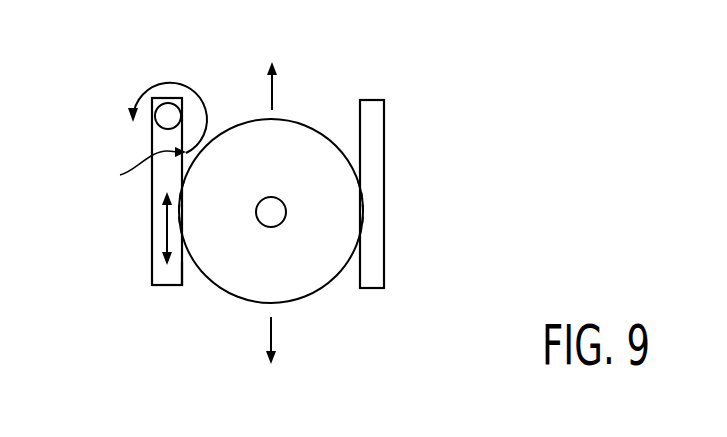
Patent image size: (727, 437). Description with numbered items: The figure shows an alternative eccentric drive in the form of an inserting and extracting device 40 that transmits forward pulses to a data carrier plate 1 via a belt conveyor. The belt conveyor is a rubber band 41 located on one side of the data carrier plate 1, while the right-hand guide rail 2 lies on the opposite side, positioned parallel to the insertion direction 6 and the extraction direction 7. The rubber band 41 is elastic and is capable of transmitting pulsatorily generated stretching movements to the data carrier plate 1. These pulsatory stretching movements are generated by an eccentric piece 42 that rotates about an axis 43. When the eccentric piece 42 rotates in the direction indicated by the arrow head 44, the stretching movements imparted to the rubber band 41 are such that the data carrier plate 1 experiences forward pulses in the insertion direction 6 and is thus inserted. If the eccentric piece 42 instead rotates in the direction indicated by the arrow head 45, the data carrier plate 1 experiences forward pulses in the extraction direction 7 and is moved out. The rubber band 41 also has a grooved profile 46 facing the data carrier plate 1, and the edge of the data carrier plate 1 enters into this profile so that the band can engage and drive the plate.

The data carrier plate 1 is at (236, 126).
The right-hand guide rail 2 is at (384, 270).
The insertion direction 6 is at (272, 93).
The extraction direction 7 is at (272, 325).
The inserting and extracting device 40 is at (408, 197).
The rubber band 41 is at (152, 239).
The eccentric piece 42 is at (162, 120).
The axis 43 is at (153, 97).
The arrow head 44 is at (167, 87).
The arrow head 45 is at (141, 169).
The grooved profile 46 is at (182, 276).